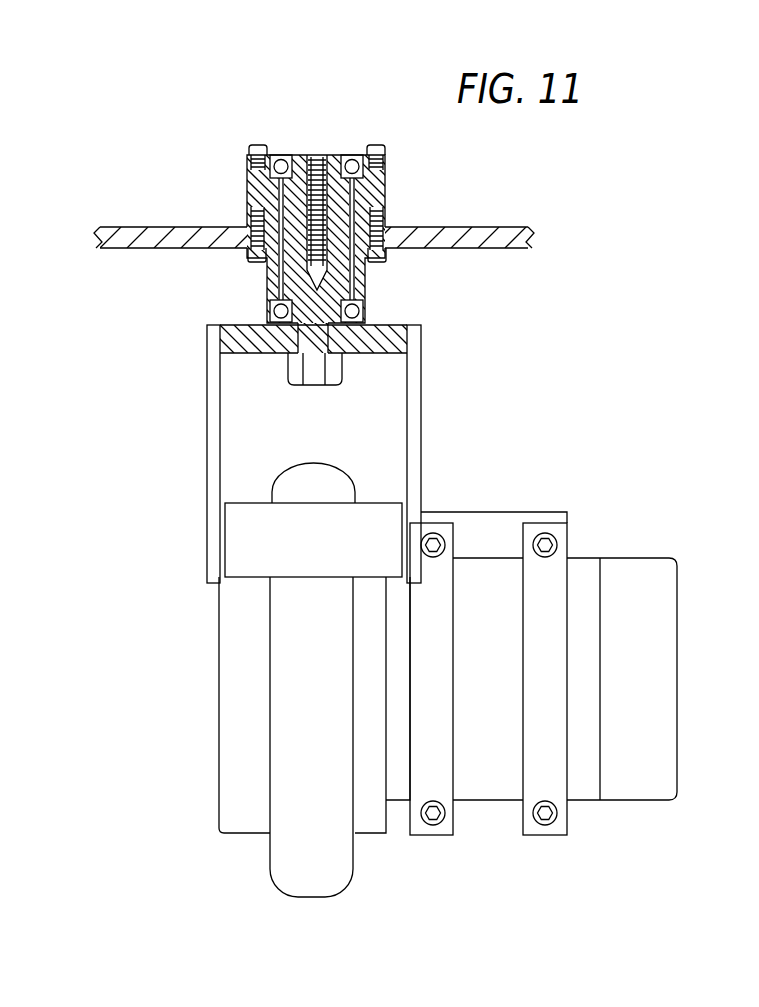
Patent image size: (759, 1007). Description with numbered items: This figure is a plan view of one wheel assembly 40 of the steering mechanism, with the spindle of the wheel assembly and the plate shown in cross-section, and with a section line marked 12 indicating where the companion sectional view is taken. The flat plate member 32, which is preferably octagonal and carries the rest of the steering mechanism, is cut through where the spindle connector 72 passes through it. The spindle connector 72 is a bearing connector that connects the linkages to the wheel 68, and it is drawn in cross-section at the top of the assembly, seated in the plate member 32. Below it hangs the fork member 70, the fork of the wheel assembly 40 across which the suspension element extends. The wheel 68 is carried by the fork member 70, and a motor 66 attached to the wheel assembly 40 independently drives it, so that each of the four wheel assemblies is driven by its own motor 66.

The section line 12- 12 is at (266, 514).
The flat plate member 32 is at (475, 227).
The wheel assembly 40 is at (501, 436).
The motor 66 is at (607, 558).
The wheel 68 is at (337, 882).
The fork member 70 is at (418, 363).
The spindle connector 72 is at (385, 176).